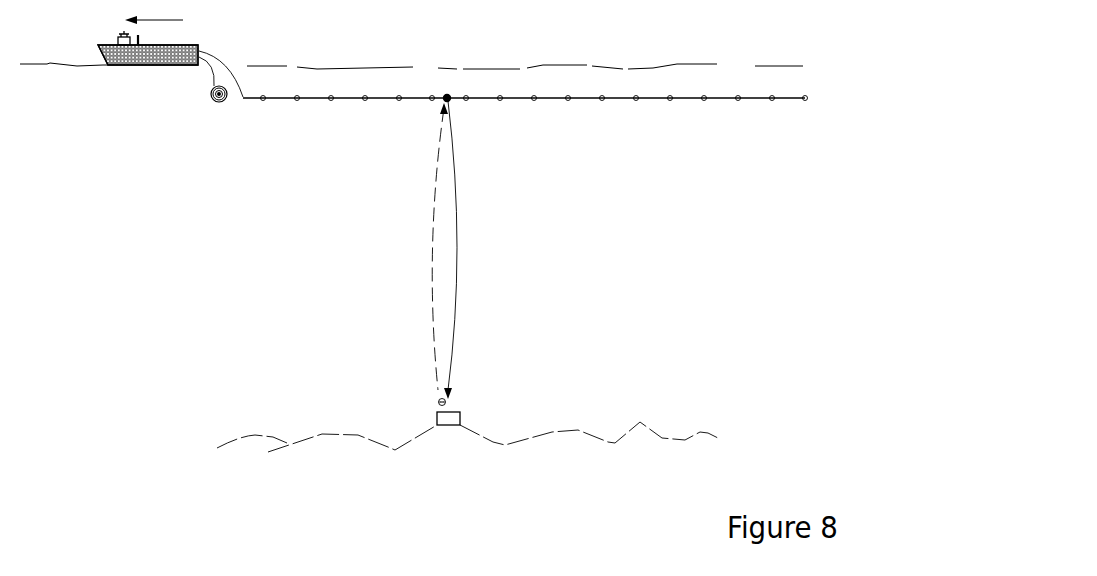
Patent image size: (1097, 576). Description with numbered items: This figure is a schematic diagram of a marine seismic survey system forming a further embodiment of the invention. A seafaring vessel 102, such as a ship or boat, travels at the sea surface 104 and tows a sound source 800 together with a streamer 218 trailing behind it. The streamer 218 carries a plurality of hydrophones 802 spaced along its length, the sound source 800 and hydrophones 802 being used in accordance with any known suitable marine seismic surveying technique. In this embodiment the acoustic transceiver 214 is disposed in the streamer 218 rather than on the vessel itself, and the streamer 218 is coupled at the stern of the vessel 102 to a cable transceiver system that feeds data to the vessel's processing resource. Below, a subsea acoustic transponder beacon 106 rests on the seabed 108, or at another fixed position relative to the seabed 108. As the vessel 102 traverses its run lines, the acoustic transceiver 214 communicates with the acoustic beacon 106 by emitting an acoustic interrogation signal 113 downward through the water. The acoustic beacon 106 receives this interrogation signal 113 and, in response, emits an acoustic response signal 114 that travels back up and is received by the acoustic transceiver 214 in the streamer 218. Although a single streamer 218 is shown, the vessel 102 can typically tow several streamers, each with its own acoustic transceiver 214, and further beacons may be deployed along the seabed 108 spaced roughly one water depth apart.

The seafaring vessel 102 is at (177, 45).
The streamer 218 is at (217, 62).
The sea surface 104 is at (720, 65).
The sound source 800 is at (213, 99).
The hydrophones 802 is at (297, 99).
The acoustic transceiver 214 is at (449, 101).
The acoustic interrogation signal 113 is at (457, 228).
The acoustic response signal 114 is at (432, 255).
The acoustic beacon 106 is at (453, 420).
The seabed 108 is at (578, 430).